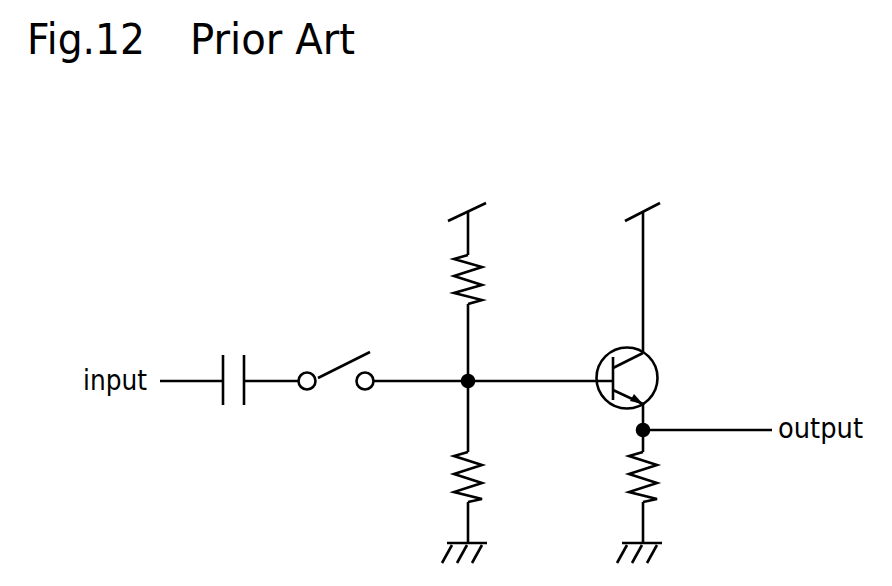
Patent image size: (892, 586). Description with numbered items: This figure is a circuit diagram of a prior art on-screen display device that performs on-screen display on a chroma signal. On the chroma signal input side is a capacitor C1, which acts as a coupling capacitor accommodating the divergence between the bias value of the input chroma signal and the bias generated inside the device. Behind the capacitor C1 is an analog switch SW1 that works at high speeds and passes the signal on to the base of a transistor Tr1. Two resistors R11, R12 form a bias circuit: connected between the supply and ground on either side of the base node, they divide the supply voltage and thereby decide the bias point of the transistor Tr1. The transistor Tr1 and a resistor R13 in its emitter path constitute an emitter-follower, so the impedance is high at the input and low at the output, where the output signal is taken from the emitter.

The capacitor C1 is at (234, 363).
The analog switch SW1 is at (338, 391).
The resistor R11 is at (496, 292).
The resistor R12 is at (495, 472).
The resistor R13 is at (671, 496).
The transistor Tr1 is at (650, 316).